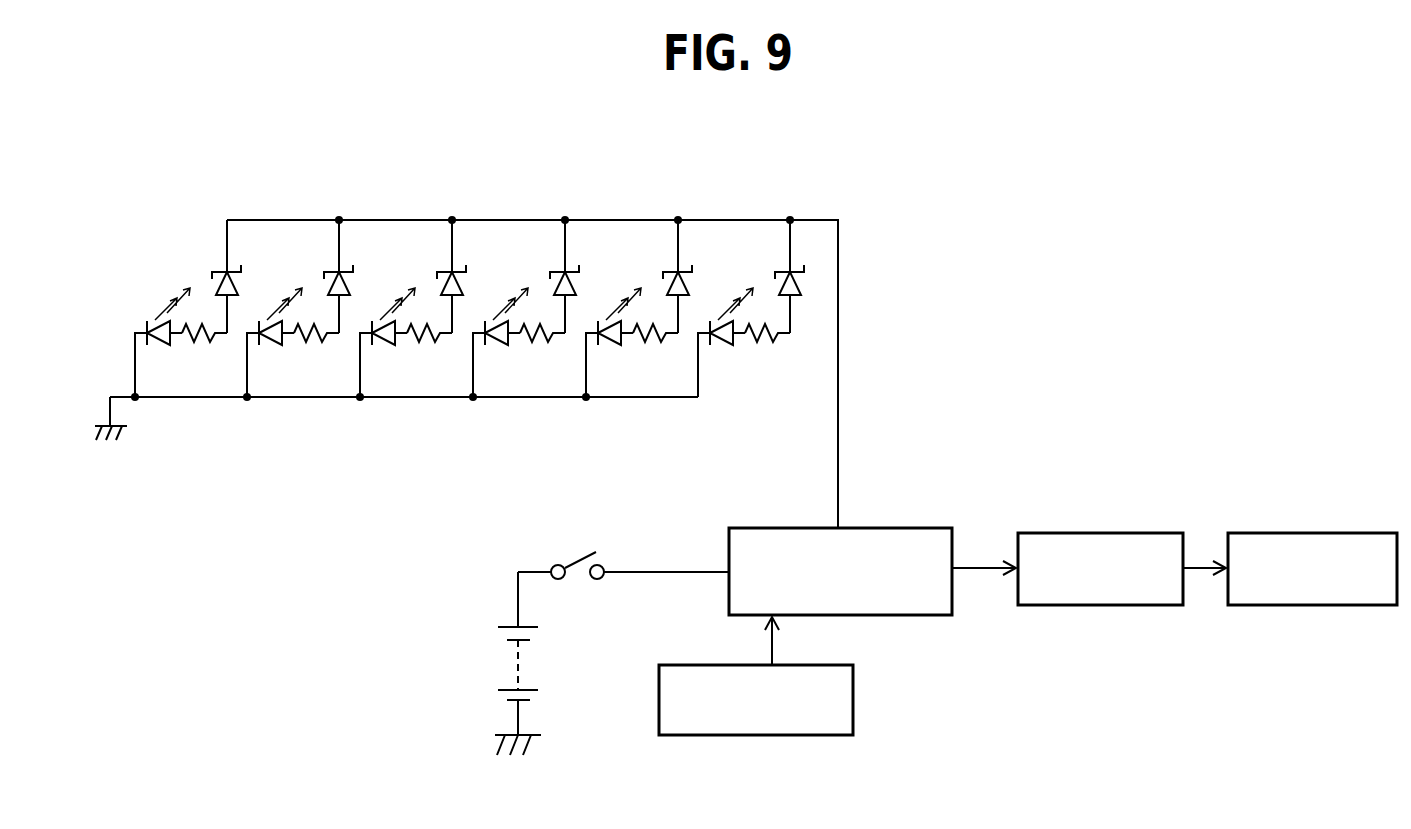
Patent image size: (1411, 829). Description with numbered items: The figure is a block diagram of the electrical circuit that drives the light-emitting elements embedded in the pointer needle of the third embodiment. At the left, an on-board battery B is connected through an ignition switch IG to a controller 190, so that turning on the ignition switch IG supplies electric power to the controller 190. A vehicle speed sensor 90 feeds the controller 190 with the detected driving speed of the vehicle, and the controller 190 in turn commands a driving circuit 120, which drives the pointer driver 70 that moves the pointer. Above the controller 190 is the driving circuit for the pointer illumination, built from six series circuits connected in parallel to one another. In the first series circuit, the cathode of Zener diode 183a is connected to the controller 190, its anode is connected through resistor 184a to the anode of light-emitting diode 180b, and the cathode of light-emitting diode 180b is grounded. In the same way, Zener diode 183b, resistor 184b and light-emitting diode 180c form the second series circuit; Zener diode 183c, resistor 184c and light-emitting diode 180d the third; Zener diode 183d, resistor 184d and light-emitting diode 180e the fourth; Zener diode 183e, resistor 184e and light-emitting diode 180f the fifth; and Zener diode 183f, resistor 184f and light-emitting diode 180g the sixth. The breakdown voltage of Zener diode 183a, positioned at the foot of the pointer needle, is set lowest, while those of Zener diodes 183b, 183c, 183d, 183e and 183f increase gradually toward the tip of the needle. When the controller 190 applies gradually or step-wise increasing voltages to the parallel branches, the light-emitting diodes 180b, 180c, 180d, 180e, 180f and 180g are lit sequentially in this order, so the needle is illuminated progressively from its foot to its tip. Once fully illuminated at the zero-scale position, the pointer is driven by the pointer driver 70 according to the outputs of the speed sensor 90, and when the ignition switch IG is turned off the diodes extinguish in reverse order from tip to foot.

The Zener diode 183a is at (798, 270).
The Zener diode 183b is at (686, 270).
The Zener diode 183c is at (573, 270).
The Zener diode 183d is at (460, 270).
The Zener diode 183e is at (347, 270).
The Zener diode 183f is at (235, 270).
The light-emitting diode 180b is at (723, 346).
The light-emitting diode 180c is at (611, 346).
The light-emitting diode 180d is at (498, 346).
The light-emitting diode 180e is at (385, 346).
The light-emitting diode 180f is at (272, 346).
The light-emitting diode 180g is at (160, 346).
The resistor 184a is at (778, 347).
The resistor 184b is at (666, 347).
The resistor 184c is at (553, 347).
The resistor 184d is at (440, 347).
The resistor 184e is at (327, 347).
The resistor 184f is at (215, 347).
The controller 190 is at (900, 615).
The vehicle speed sensor 90 is at (763, 735).
The driving circuit 120 is at (1108, 532).
The pointer driver 70 is at (1320, 532).
The on-board battery B is at (510, 650).
The ignition switch IG is at (594, 583).